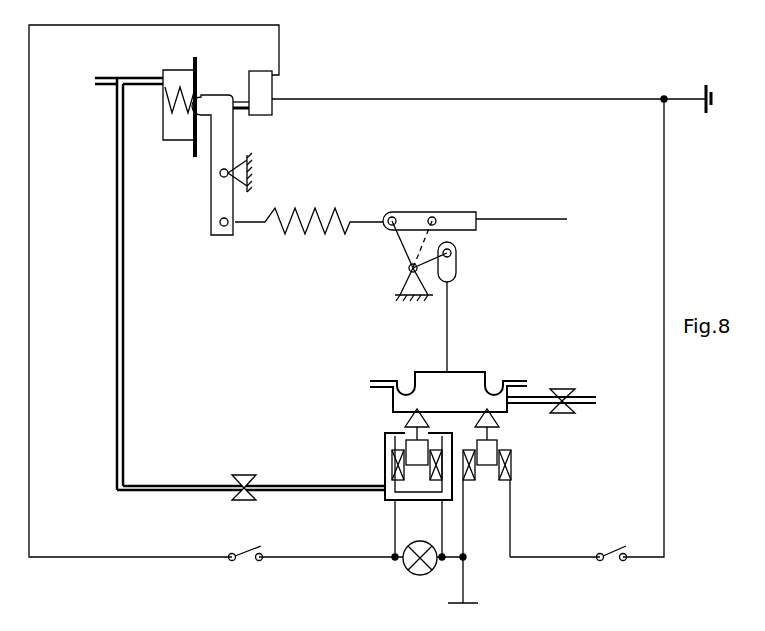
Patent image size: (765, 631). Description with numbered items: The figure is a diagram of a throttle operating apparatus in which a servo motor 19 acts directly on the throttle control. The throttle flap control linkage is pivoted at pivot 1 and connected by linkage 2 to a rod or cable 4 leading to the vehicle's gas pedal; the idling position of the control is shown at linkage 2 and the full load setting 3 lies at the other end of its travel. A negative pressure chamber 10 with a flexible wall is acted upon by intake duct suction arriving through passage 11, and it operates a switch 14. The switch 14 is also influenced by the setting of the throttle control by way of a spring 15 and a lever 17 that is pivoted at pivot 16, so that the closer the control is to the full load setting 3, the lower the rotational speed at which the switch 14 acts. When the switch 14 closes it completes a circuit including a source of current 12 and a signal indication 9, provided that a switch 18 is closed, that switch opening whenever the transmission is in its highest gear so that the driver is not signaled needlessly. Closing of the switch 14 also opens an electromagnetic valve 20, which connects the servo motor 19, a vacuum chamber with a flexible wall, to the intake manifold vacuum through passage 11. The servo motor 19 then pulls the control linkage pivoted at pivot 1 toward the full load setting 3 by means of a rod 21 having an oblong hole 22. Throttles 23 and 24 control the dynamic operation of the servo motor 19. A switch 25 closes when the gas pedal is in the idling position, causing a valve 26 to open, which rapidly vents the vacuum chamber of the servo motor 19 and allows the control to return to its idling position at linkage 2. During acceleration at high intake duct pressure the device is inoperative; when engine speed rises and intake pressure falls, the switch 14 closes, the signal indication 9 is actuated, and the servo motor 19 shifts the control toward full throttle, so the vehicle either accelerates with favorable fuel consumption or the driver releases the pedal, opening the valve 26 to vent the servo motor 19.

The pivot 1 is at (407, 269).
The linkage 2 is at (392, 213).
The full load setting 3 is at (432, 213).
The rod or cable 4 is at (535, 219).
The signal indication 9 is at (410, 572).
The negative pressure chamber 10 is at (178, 70).
The passage 11 is at (95, 82).
The source of current 12 is at (712, 93).
The switch 14 is at (272, 110).
The spring 15 is at (300, 215).
The pivot 16 is at (220, 173).
The lever 17 is at (212, 232).
The switch 18 is at (243, 548).
The servo motor 19 is at (395, 401).
The electromagnetic valve 20 is at (395, 462).
The rod 21 is at (455, 322).
The oblong hole 22 is at (456, 268).
The throttle 23 is at (247, 475).
The throttle 24 is at (562, 390).
The switch 25 is at (610, 550).
The valve 26 is at (512, 461).